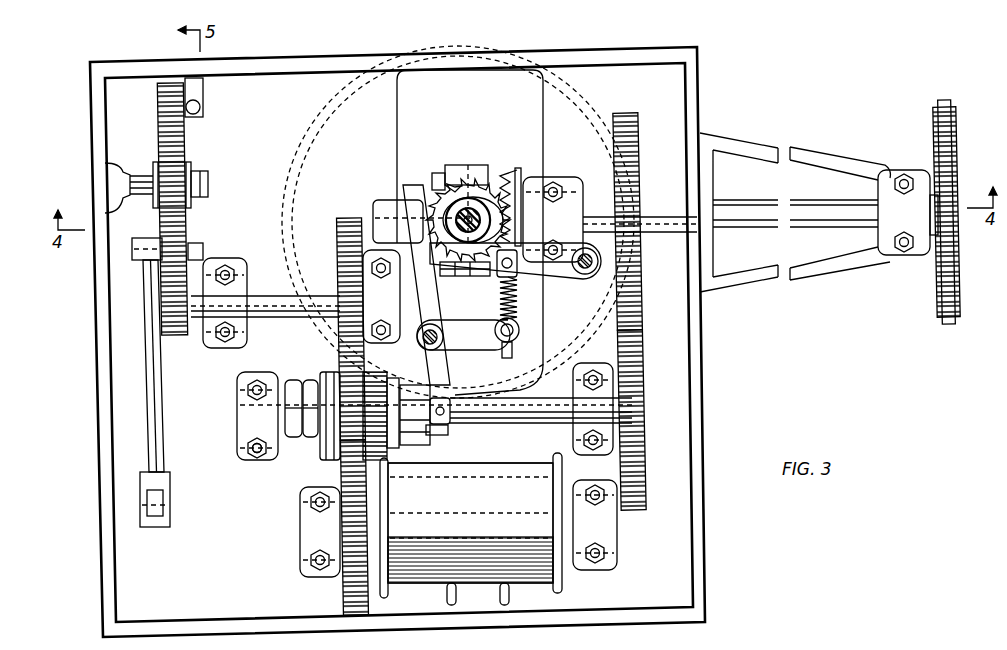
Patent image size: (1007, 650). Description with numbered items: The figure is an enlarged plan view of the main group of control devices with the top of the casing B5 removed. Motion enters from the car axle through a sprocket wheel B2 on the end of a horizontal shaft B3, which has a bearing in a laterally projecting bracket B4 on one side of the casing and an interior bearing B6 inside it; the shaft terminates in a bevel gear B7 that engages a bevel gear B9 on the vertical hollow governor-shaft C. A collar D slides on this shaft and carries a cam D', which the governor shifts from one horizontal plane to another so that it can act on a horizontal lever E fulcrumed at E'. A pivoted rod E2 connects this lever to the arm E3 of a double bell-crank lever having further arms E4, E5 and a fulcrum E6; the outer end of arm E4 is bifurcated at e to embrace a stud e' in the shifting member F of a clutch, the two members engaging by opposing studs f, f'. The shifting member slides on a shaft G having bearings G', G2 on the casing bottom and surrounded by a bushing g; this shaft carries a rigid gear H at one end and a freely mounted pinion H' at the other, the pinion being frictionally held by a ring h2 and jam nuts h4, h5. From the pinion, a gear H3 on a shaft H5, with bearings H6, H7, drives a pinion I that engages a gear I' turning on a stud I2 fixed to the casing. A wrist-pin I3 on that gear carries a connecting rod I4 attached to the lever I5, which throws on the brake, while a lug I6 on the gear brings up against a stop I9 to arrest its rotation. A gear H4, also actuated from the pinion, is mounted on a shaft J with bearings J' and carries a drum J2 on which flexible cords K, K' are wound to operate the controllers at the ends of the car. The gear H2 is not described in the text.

The casing B5 is at (692, 430).
The pinion I is at (172, 230).
The stop I9 is at (203, 96).
The gear I' is at (180, 170).
The stud I2 is at (210, 188).
The lug I6 is at (203, 250).
The wrist-pin I3 is at (132, 252).
The connecting rod I4 is at (150, 355).
The lever I5 is at (165, 512).
The bearing H7 is at (225, 303).
The shaft H5 is at (292, 316).
The gear H3 is at (348, 258).
The gear H4 is at (350, 585).
The bearing H6 is at (381, 296).
The bearing G2 is at (257, 416).
The jam nut h5 is at (290, 381).
The jam nut h4 is at (308, 380).
The ring h2 is at (326, 373).
The bushing g is at (256, 462).
The pinion H' is at (436, 448).
The shifting member of clutch coupling F is at (414, 450).
The stud f' is at (396, 430).
The stud f is at (415, 401).
The bifurcation e is at (453, 425).
The stud e' is at (443, 443).
The shaft G is at (541, 410).
The bearing G' is at (593, 409).
The governor-shaft C is at (421, 221).
The arm of bell-crank lever E5 is at (426, 285).
The fulcrum E6 is at (460, 278).
The lever E is at (515, 277).
The fulcrum E' is at (585, 279).
The pivoted rod E2 is at (517, 302).
The arm of bell-crank lever E3 is at (463, 335).
The arm of bell-crank lever E4 is at (503, 356).
The collar D is at (468, 201).
The cam D' is at (476, 220).
The bevel gear B9 is at (437, 174).
The bevel gear B7 is at (509, 186).
The interior bearing B6 is at (553, 219).
The gear wheel H2 is at (636, 155).
The gear H is at (640, 420).
The horizontal shaft B3 is at (815, 212).
The bracket B4 is at (815, 272).
The sprocket wheel B2 is at (942, 279).
The shaft J is at (471, 525).
The drum J2 is at (496, 467).
The bearing J' is at (454, 528).
The flexible cord K is at (518, 597).
The flexible cord K' is at (434, 597).